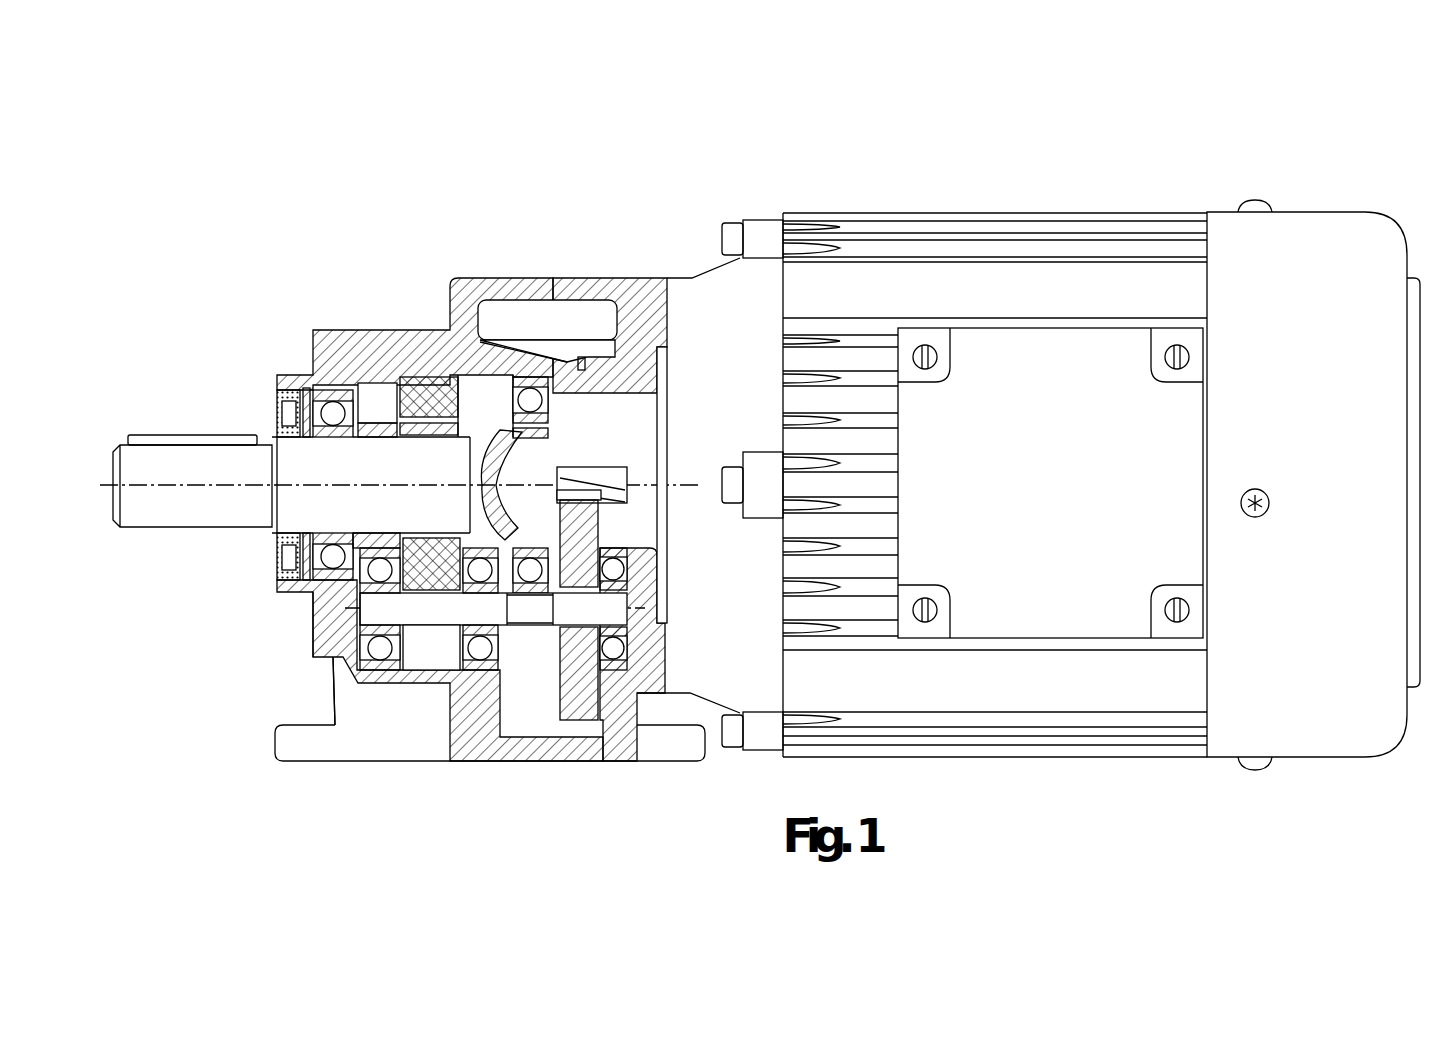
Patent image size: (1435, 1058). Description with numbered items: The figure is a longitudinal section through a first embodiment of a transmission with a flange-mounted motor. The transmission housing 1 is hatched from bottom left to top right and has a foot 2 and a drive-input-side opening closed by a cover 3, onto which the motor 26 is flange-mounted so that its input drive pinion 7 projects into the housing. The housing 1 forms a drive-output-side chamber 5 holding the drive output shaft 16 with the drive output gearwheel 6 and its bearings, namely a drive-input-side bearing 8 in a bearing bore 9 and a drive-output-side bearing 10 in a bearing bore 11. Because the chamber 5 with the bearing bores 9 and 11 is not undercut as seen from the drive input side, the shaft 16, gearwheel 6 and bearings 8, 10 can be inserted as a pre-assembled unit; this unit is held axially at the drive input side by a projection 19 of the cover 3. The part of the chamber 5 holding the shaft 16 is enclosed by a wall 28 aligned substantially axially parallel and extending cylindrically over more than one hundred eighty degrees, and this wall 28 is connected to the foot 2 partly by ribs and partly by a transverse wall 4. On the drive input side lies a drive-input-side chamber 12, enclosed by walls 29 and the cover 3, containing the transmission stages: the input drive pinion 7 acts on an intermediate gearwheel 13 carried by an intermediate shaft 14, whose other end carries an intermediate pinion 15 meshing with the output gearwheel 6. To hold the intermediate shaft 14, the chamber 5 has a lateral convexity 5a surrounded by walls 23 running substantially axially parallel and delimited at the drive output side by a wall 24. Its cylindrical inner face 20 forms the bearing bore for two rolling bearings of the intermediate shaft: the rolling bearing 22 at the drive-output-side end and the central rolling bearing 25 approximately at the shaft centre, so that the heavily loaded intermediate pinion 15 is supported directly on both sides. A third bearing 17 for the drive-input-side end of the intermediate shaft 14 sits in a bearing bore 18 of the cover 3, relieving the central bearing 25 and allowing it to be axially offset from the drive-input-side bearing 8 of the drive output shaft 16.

The transmission housing 1 is at (362, 348).
The foot 2 is at (297, 745).
The cover 3 is at (630, 360).
The transverse wall 4 is at (463, 273).
The drive-output-side chamber 5 is at (383, 396).
The lateral convexity 5a is at (405, 663).
The drive output gearwheel 6 is at (425, 398).
The input drive pinion 7 is at (570, 470).
The drive-input-side bearing 8 is at (522, 320).
The bearing bore 9 is at (530, 396).
The drive-output-side bearing 10 is at (328, 412).
The bearing bore 11 is at (343, 397).
The drive-input-side chamber 12 is at (640, 405).
The intermediate gearwheel 13 is at (577, 700).
The intermediate shaft 14 is at (590, 603).
The intermediate pinion 15 is at (360, 613).
The drive output shaft 16 is at (190, 458).
The third bearing 17 is at (615, 648).
The bearing bore 18 is at (632, 690).
The projection 19 is at (573, 368).
The cylindrical inner face 20 is at (400, 655).
The rolling bearing 22 is at (330, 660).
The walls 23 is at (430, 655).
The wall 24 is at (340, 640).
The rolling bearing 25 is at (490, 665).
The motor 26 is at (820, 235).
The wall 28 is at (500, 332).
The walls 29 is at (517, 327).